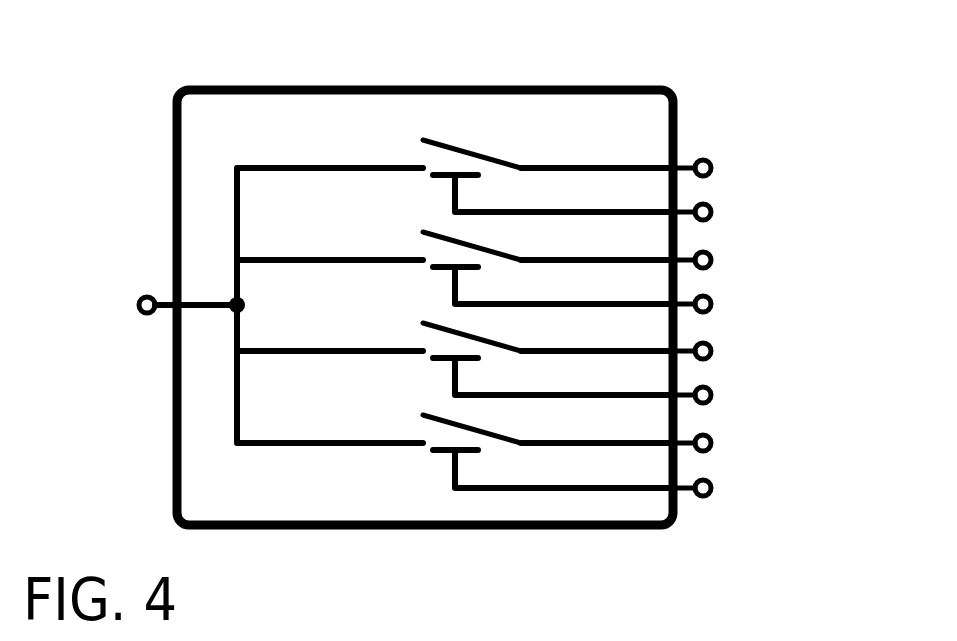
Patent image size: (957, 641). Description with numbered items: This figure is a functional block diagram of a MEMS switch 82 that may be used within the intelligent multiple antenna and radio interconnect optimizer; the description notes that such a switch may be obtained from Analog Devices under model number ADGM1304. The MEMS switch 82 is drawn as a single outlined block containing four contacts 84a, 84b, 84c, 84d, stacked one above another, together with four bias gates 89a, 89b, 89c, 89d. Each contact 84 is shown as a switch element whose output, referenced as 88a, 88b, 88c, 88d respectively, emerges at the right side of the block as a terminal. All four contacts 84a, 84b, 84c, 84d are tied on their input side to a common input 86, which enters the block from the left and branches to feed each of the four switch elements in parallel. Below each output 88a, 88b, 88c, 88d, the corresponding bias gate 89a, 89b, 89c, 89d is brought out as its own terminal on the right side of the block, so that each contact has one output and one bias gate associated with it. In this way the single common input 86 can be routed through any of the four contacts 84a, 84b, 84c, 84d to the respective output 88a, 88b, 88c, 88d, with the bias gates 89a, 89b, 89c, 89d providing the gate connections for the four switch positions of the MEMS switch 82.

The MEMS switch 82 is at (133, 100).
The contact 84 is at (521, 63).
The first contact 84a is at (477, 152).
The second contact 84b is at (425, 232).
The third contact 84c is at (423, 325).
The fourth contact 84d is at (423, 417).
The common input 86 is at (138, 297).
The first output 88a is at (713, 162).
The first bias gate 89a is at (713, 206).
The second output 88b is at (713, 254).
The second bias gate 89b is at (715, 297).
The third output 88c is at (712, 345).
The third bias gate 89c is at (712, 390).
The fourth output 88d is at (712, 437).
The fourth bias gate 89d is at (715, 482).